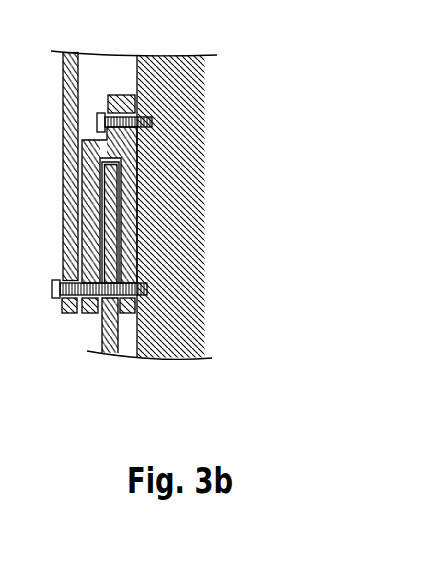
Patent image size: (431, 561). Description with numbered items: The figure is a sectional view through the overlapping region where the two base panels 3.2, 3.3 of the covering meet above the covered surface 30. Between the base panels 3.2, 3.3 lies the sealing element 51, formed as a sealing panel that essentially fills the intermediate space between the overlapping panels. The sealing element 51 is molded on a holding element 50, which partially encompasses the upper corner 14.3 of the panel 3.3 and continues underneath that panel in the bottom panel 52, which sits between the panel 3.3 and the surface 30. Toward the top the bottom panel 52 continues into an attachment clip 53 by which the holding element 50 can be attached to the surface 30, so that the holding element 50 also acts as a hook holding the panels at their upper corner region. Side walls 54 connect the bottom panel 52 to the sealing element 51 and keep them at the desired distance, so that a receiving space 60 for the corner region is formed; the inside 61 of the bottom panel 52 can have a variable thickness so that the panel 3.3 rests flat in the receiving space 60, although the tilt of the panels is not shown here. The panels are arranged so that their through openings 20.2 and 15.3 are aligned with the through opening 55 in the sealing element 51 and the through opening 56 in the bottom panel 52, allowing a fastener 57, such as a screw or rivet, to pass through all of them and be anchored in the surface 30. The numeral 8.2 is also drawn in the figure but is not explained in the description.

The holding element 50 is at (85, 135).
The base panel 3.2 is at (72, 157).
The receiving space 60 is at (100, 198).
The sealing element 51 is at (88, 225).
The upper corner 14.3 is at (137, 156).
The bottom panel 52 is at (130, 237).
The inside 61 is at (121, 256).
The covered surface 30 is at (139, 187).
The attachment clip 53 is at (122, 103).
The side walls 54 is at (112, 155).
The fastener 57 is at (60, 299).
The support 8.2 is at (68, 314).
The through opening 20.2 is at (73, 315).
The through opening 55 is at (83, 315).
The base panel 3.3 is at (108, 313).
The through opening 15.3 is at (114, 298).
The through opening 56 is at (132, 299).